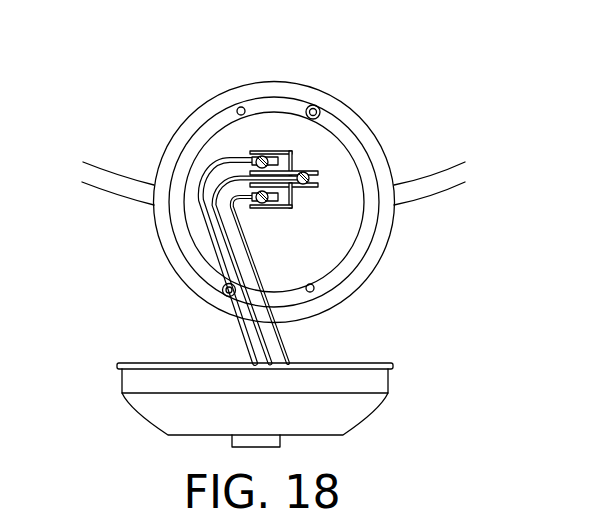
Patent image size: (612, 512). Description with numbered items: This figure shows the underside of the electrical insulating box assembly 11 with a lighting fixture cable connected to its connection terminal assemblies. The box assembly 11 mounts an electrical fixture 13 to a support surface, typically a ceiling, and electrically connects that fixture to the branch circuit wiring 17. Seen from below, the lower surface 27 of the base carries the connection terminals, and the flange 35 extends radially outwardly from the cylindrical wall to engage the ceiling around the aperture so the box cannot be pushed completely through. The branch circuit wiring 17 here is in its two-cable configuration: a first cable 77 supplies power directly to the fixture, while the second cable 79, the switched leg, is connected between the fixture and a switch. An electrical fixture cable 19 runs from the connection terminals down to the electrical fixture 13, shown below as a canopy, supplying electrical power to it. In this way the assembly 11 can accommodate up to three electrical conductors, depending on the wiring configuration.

The electrical insulating box assembly 11 is at (311, 57).
The electrical fixture 13 is at (135, 418).
The branch circuit wiring 17 is at (82, 201).
The electrical fixture cable 19 is at (222, 318).
The lower surface 27 is at (230, 138).
The flange 35 is at (363, 291).
The first cable 77 is at (98, 168).
The second cable 79 is at (443, 193).